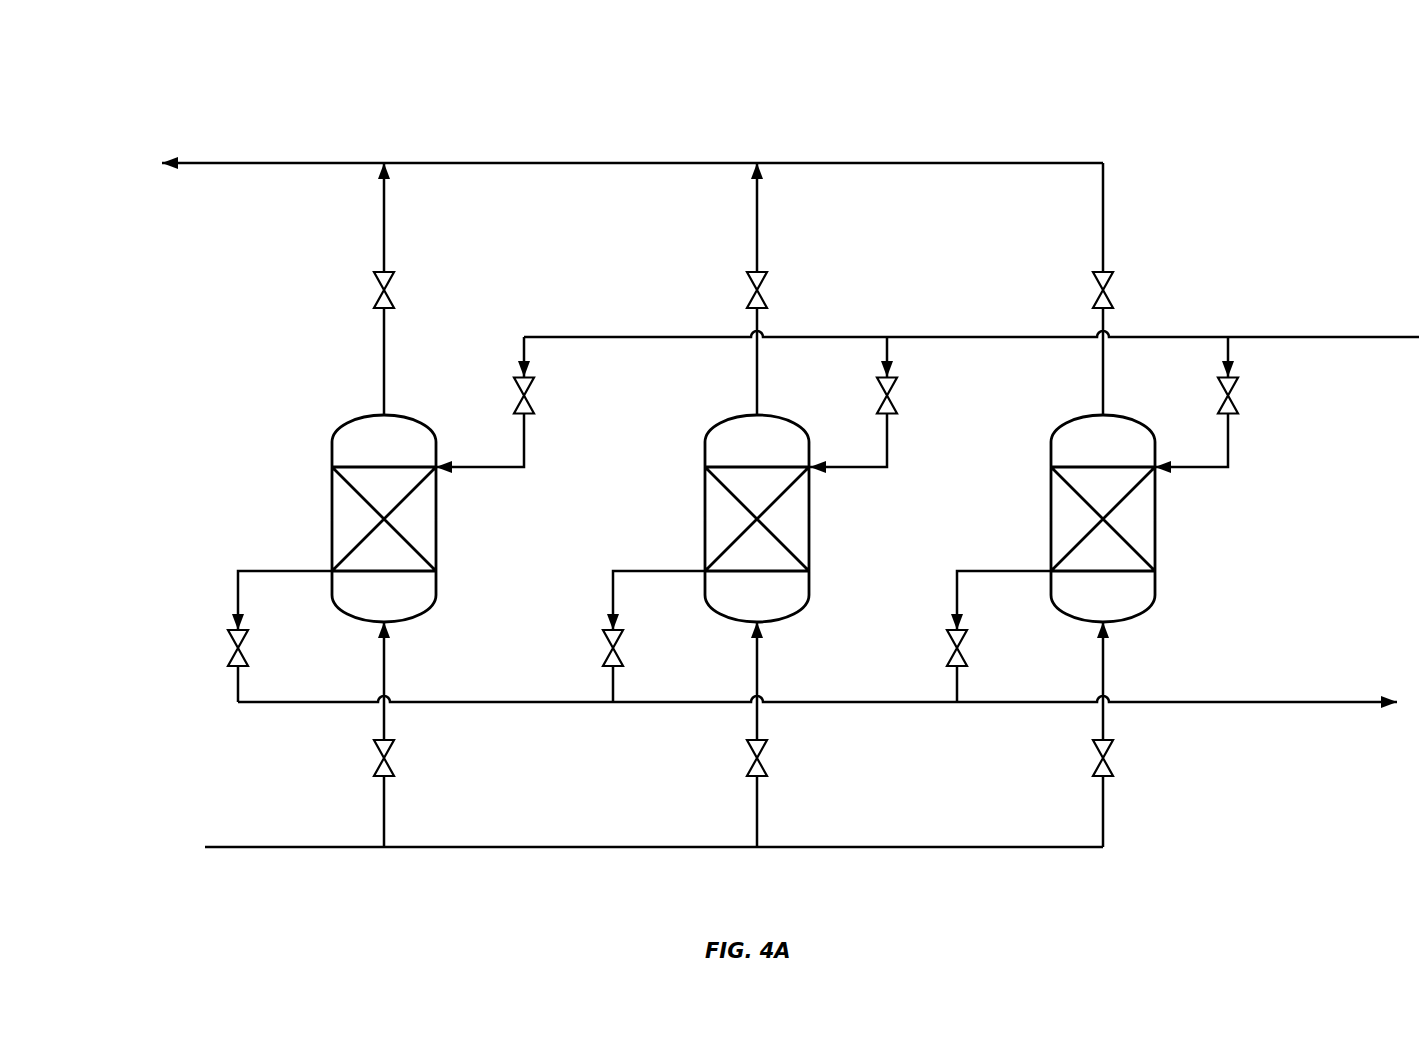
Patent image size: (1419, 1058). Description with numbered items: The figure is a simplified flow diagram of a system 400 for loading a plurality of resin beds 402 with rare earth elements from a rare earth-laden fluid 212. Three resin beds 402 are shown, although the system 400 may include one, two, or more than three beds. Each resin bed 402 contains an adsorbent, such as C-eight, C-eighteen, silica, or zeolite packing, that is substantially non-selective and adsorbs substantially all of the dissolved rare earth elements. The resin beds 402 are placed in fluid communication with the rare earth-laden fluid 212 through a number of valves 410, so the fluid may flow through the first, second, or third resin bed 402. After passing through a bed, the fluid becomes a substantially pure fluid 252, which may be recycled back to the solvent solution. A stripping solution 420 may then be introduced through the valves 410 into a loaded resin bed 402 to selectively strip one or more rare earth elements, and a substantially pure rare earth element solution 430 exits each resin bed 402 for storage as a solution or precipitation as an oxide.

The system 400 is at (150, 92).
The substantially pure fluid 252 is at (210, 165).
The resin bed 402 is at (437, 532).
The valve 410 is at (388, 293).
The stripping solution 420 is at (1360, 340).
The substantially pure rare earth element solution 430 is at (1305, 705).
The rare earth-laden fluid 212 is at (237, 848).